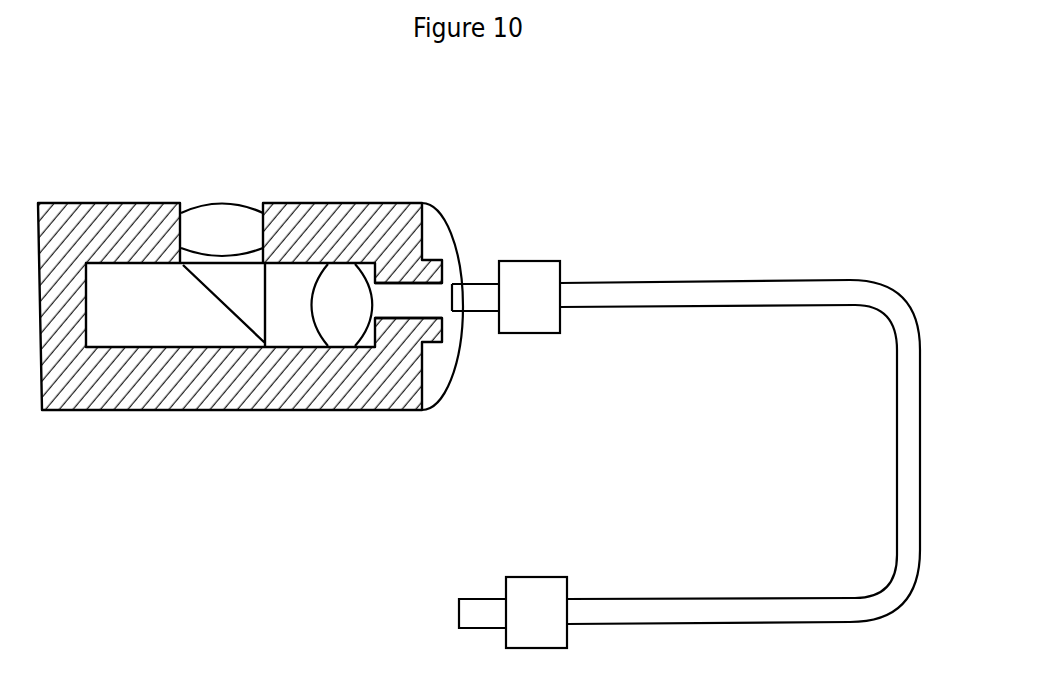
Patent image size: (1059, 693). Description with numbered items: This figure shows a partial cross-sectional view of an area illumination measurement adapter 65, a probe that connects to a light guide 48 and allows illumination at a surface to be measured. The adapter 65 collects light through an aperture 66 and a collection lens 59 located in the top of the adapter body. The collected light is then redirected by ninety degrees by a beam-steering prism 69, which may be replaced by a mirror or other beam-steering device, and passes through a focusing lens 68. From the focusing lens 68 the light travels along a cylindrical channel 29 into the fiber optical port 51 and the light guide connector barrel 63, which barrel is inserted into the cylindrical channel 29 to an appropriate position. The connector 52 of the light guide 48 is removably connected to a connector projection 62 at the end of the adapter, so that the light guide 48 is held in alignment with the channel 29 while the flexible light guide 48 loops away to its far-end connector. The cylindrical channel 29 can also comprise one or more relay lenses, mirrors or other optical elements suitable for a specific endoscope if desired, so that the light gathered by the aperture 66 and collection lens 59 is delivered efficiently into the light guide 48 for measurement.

The area illumination measurement adapter 65 is at (403, 176).
The aperture 66 is at (258, 193).
The collection lens 59 is at (215, 197).
The beam-steering prism 69 is at (203, 291).
The focusing lens 68 is at (318, 262).
The connector projection 62 is at (452, 283).
The cylindrical channel 29 is at (415, 308).
The fiber optical port 51 is at (463, 281).
The light guide connector barrel 63 is at (475, 282).
The connector 52 is at (562, 258).
The light guide 48 is at (703, 272).